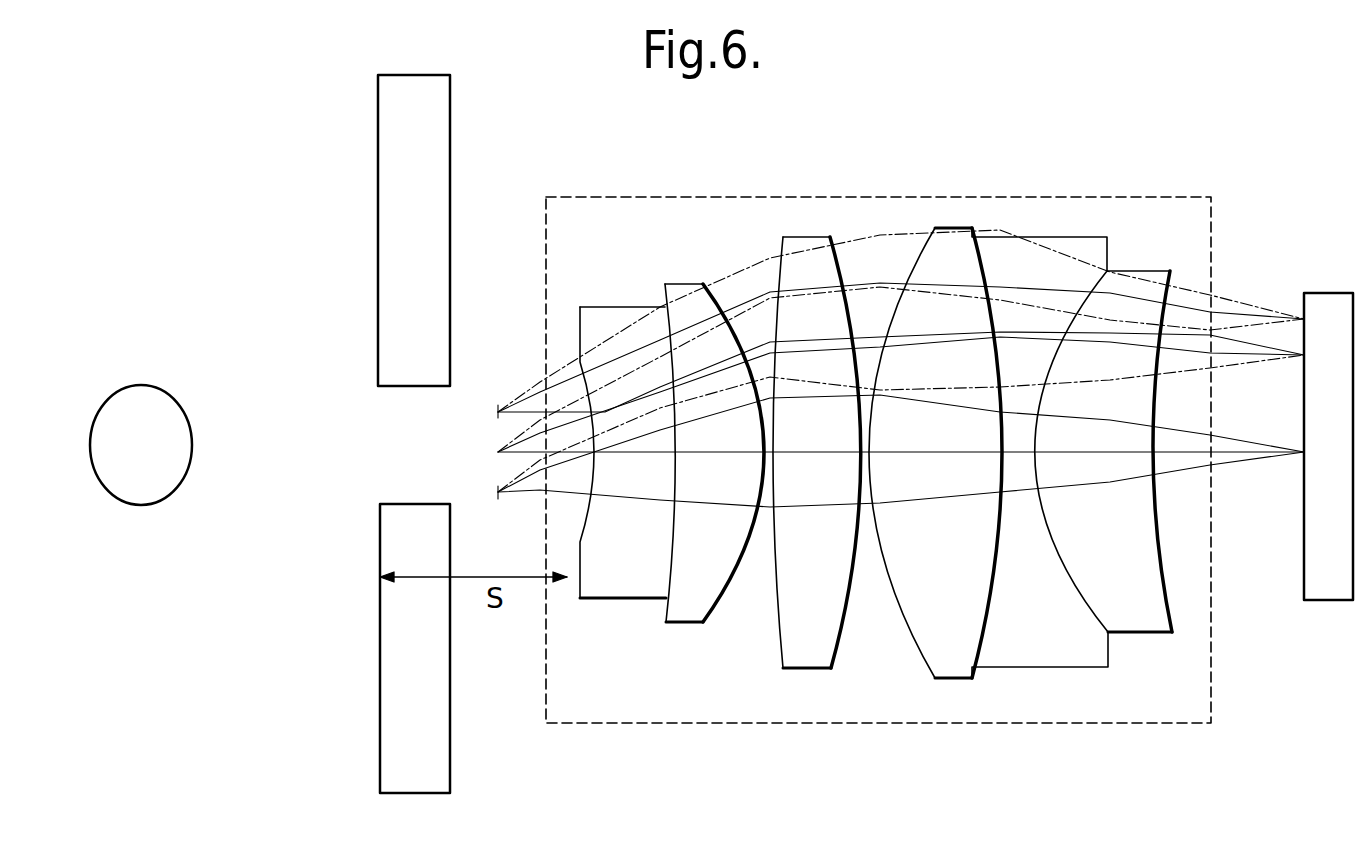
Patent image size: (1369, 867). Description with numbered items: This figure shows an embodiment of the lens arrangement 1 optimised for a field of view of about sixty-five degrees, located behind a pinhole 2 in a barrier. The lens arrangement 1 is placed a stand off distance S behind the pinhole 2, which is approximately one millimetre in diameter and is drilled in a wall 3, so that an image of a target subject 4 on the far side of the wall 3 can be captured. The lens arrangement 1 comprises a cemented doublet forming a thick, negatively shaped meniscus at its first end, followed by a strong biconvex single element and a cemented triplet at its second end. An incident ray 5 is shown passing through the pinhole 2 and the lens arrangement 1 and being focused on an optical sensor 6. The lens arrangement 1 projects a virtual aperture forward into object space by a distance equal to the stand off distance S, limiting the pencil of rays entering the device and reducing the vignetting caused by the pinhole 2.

The lens arrangement 1 is at (857, 196).
The pinhole 2 is at (420, 457).
The wall 3 is at (378, 202).
The target subject 4 is at (118, 390).
The incident ray 5 is at (1262, 462).
The optical sensor 6 is at (1333, 293).